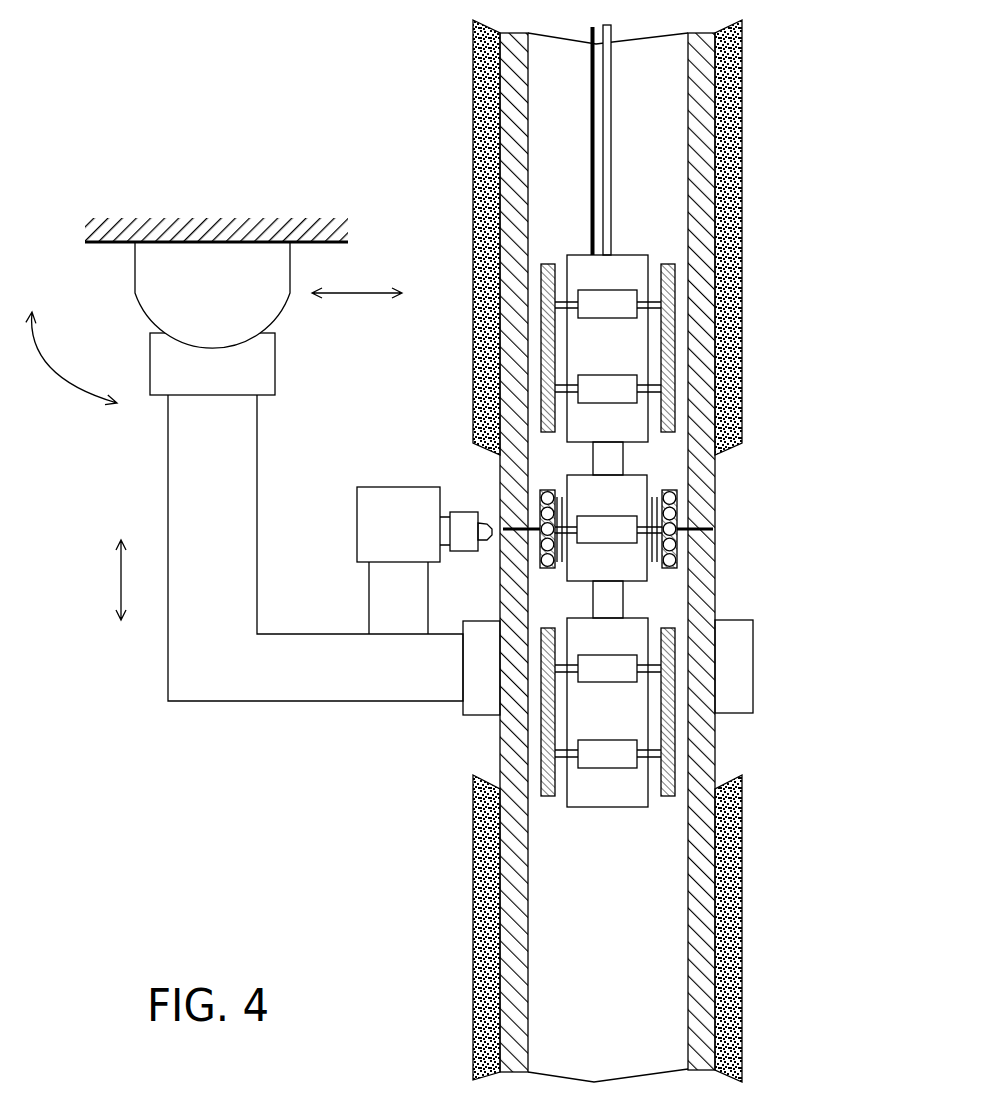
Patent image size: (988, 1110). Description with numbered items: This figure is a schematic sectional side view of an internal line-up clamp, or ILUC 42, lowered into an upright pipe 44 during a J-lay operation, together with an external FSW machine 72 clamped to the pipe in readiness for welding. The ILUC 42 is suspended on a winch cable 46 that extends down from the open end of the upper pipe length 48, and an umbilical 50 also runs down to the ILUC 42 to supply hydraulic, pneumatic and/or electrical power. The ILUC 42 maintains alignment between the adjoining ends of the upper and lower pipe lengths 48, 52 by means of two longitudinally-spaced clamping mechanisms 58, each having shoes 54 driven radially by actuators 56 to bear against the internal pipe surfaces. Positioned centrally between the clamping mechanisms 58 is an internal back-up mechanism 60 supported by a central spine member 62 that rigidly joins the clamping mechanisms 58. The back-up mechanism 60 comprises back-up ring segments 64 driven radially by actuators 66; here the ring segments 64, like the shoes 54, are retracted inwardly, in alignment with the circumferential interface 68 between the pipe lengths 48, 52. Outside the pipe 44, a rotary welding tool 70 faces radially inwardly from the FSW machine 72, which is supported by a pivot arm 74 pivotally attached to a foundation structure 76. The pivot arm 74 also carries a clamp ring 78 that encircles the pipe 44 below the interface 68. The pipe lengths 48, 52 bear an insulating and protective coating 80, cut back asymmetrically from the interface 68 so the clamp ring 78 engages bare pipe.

The internal line-up clamp 42 is at (565, 224).
The pipe 44 is at (452, 80).
The winch cable 46 is at (607, 150).
The upper pipe length 48 is at (706, 265).
The umbilical 50 is at (590, 106).
The lower pipe length 52 is at (503, 900).
The shoes 54 is at (668, 265).
The actuators 56 is at (604, 303).
The clamping mechanisms 58 is at (581, 420).
The internal back-up mechanism 60 is at (630, 497).
The central spine member 62 is at (612, 603).
The back-up ring segments 64 is at (673, 563).
The actuators 66 is at (612, 528).
The circumferential interface 68 is at (715, 525).
The rotary welding tools 70 is at (464, 527).
The external FSW machine 72 is at (382, 535).
The pivot arm 74 is at (207, 680).
The foundation structure 76 is at (124, 226).
The clamp ring 78 is at (742, 654).
The insulating and protective coating 80 is at (478, 200).